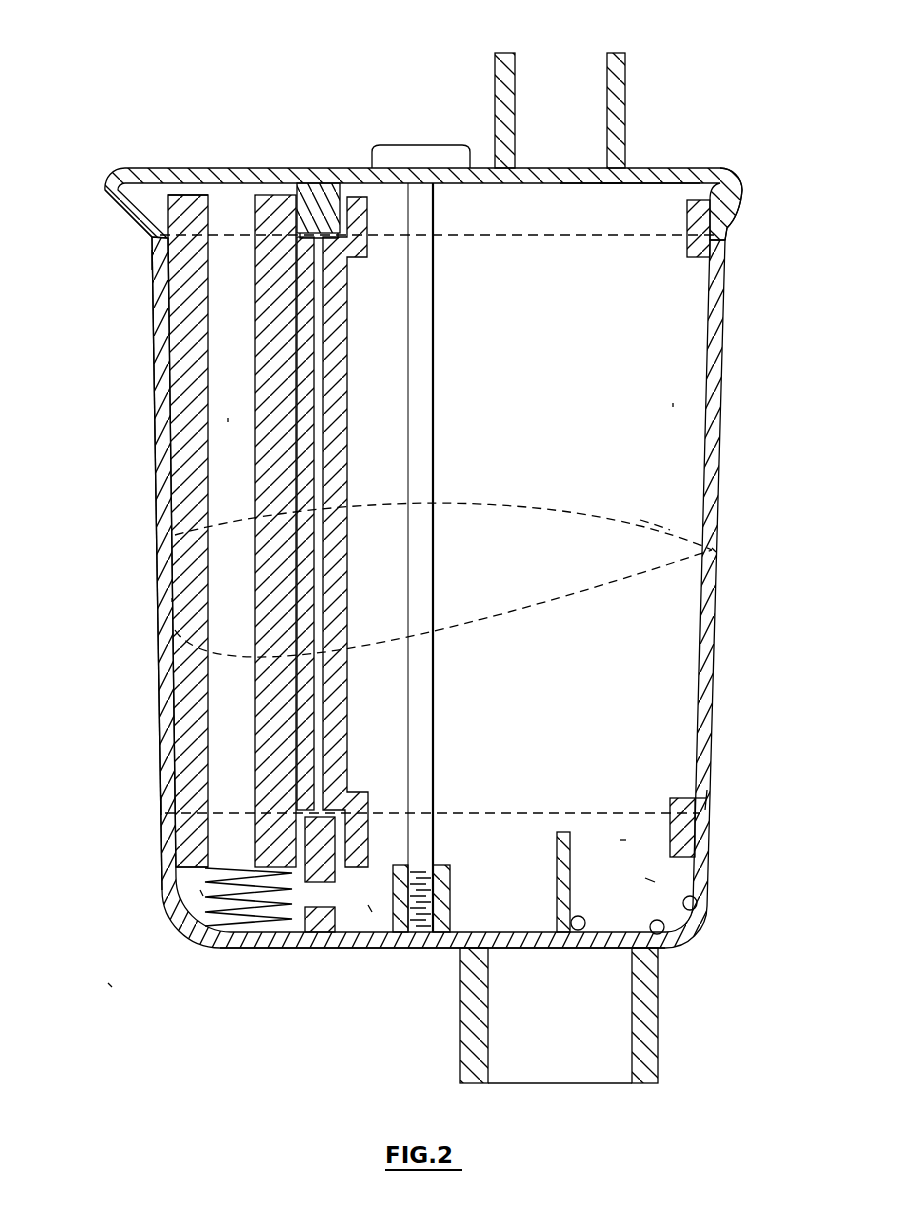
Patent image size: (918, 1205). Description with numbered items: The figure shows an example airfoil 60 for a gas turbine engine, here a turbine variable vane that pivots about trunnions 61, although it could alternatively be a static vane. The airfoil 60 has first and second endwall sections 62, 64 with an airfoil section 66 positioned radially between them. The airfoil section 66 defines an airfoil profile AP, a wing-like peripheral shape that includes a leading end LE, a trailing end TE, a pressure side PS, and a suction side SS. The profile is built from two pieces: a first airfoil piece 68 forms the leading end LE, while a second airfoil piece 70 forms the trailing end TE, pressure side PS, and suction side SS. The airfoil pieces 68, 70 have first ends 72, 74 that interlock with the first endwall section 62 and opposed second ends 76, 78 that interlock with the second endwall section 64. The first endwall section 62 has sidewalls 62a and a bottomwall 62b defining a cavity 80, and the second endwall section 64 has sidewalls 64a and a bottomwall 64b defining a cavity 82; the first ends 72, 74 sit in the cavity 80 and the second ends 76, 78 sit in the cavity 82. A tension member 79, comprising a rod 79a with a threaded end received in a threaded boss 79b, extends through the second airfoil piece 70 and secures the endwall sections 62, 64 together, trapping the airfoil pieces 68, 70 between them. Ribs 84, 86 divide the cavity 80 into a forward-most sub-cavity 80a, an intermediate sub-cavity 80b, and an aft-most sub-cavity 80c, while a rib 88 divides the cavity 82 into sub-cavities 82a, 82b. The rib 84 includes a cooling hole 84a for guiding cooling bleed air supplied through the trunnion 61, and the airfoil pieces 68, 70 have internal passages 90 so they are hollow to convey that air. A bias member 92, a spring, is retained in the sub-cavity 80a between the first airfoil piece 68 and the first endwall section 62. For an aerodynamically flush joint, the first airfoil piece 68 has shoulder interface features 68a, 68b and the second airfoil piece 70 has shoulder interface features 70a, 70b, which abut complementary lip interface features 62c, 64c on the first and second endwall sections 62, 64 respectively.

The airfoil 60 is at (110, 985).
The trunnions 61 is at (624, 110).
The first endwall section 62 is at (705, 886).
The sidewalls 62a is at (698, 905).
The bottomwall 62b is at (679, 936).
The interface feature 62c is at (700, 797).
The second endwall section 64 is at (744, 189).
The sidewalls 64a is at (722, 184).
The bottomwall 64b is at (672, 187).
The interface feature 64c is at (729, 216).
The airfoil section 66 is at (148, 505).
The first airfoil piece 68 is at (165, 355).
The interface feature 68a is at (213, 853).
The interface feature 68b is at (160, 232).
The second airfoil piece 70 is at (725, 345).
The interface feature 70a is at (700, 825).
The interface feature 70b is at (712, 236).
The first end 72 is at (148, 803).
The first end 74 is at (718, 800).
The second end 76 is at (146, 263).
The second end 78 is at (734, 258).
The tension member 79 is at (395, 148).
The rod 79a is at (440, 356).
The threaded boss 79b is at (378, 913).
The cavity 80 is at (623, 838).
The sub-cavity 80a is at (198, 893).
The sub-cavity 80b is at (370, 910).
The sub-cavity 80c is at (650, 880).
The cavity 82 is at (630, 213).
The sub-cavity 82a is at (142, 203).
The sub-cavity 82b is at (588, 200).
The rib 84 is at (340, 918).
The cooling hole 84a is at (307, 885).
The rib 86 is at (573, 918).
The rib 88 is at (288, 232).
The internal passages 90 is at (228, 420).
The bias member 92 is at (200, 925).
The suction side SS is at (462, 505).
The pressure side PS is at (452, 632).
The airfoil profile AP is at (646, 520).
The trailing end TE is at (716, 548).
The leading end LE is at (165, 600).